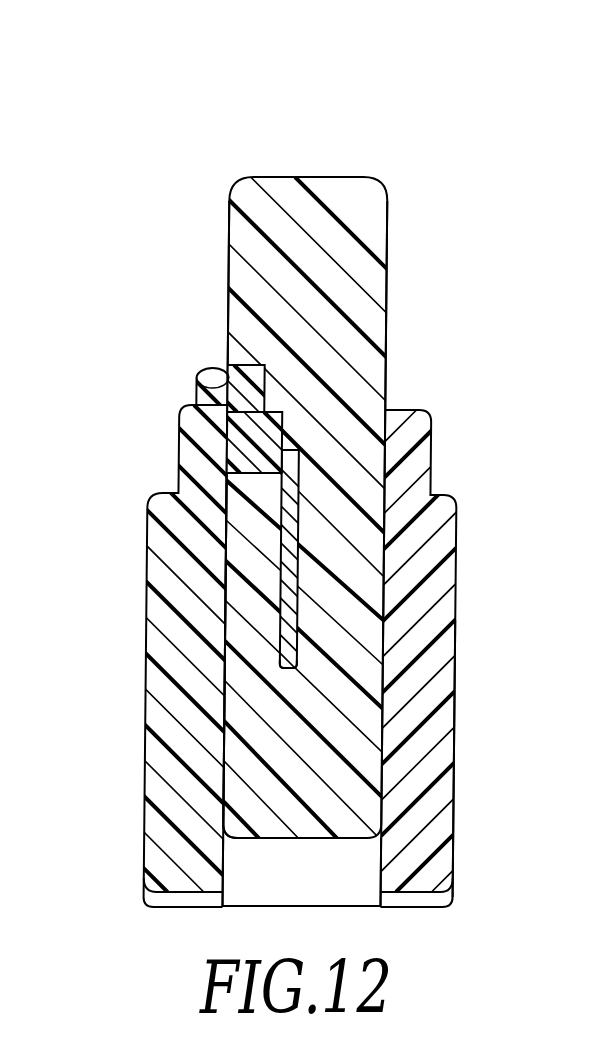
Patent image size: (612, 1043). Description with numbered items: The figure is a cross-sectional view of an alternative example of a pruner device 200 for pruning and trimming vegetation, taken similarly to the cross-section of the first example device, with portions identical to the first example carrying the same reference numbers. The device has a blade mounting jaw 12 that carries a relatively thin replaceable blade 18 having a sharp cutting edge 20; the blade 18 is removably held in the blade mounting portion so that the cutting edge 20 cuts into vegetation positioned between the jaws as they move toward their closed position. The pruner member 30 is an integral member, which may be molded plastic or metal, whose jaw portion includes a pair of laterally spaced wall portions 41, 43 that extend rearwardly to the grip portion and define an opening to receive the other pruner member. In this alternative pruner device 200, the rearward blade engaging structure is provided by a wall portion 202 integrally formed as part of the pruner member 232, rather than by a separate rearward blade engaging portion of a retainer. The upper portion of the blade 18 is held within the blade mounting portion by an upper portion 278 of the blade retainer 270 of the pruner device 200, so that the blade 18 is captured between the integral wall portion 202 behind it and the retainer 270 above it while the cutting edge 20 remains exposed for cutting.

The pruner device 200 is at (198, 122).
The jaw 12 is at (378, 232).
The blade 18 is at (311, 477).
The cutting edge 20 is at (292, 657).
The pruner member 30 is at (450, 537).
The wall portion 41 is at (445, 678).
The wall portion 43 is at (163, 538).
The wall portion 202 is at (240, 605).
The pruner member 232 is at (323, 813).
The blade retainer 270 is at (226, 385).
The upper portion 278 is at (240, 452).